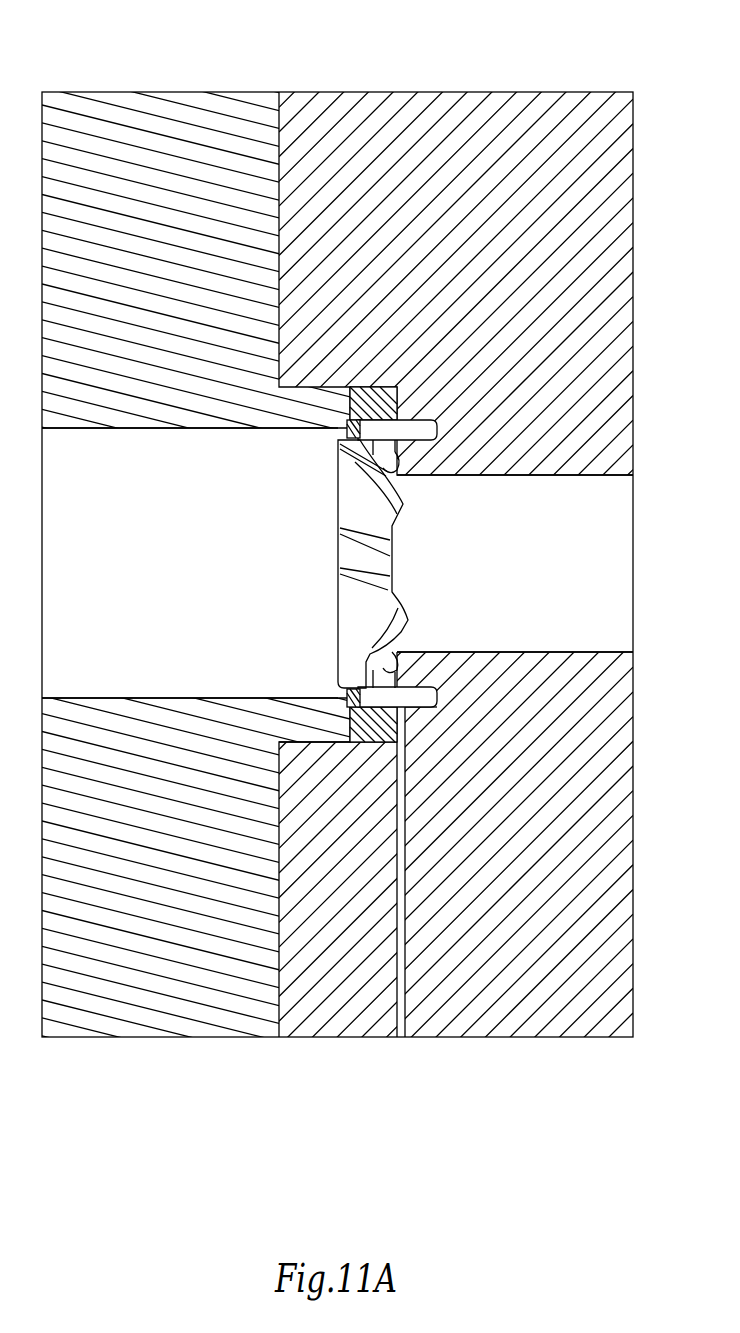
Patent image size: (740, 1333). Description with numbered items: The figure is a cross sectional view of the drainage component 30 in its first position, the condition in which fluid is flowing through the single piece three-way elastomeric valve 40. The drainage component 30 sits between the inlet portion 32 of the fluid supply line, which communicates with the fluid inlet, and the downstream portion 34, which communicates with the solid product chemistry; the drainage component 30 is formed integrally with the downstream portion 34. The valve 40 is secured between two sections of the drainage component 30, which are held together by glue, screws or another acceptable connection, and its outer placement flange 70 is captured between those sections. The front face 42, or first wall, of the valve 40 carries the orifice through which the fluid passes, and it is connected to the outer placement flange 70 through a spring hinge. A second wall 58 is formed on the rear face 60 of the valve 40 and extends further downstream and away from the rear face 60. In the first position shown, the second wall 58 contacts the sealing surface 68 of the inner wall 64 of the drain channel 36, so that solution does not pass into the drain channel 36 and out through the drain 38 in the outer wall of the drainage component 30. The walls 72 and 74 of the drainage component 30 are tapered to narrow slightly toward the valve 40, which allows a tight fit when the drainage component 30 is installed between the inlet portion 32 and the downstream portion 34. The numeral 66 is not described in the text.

The drainage component 30 is at (622, 34).
The inlet portion 32 is at (231, 594).
The downstream portion 34 is at (488, 567).
The drain channel 36 is at (420, 424).
The drain 38 is at (404, 1036).
The elastomeric valve 40 is at (428, 352).
The front face 42 is at (338, 510).
The second wall 58 is at (396, 480).
The rear face 60 is at (399, 607).
The inner wall 64 is at (409, 682).
The slot 66 is at (420, 705).
The sealing surface 68 is at (395, 472).
The outer placement flange 70 is at (370, 743).
The wall 72 is at (497, 475).
The wall 74 is at (197, 428).